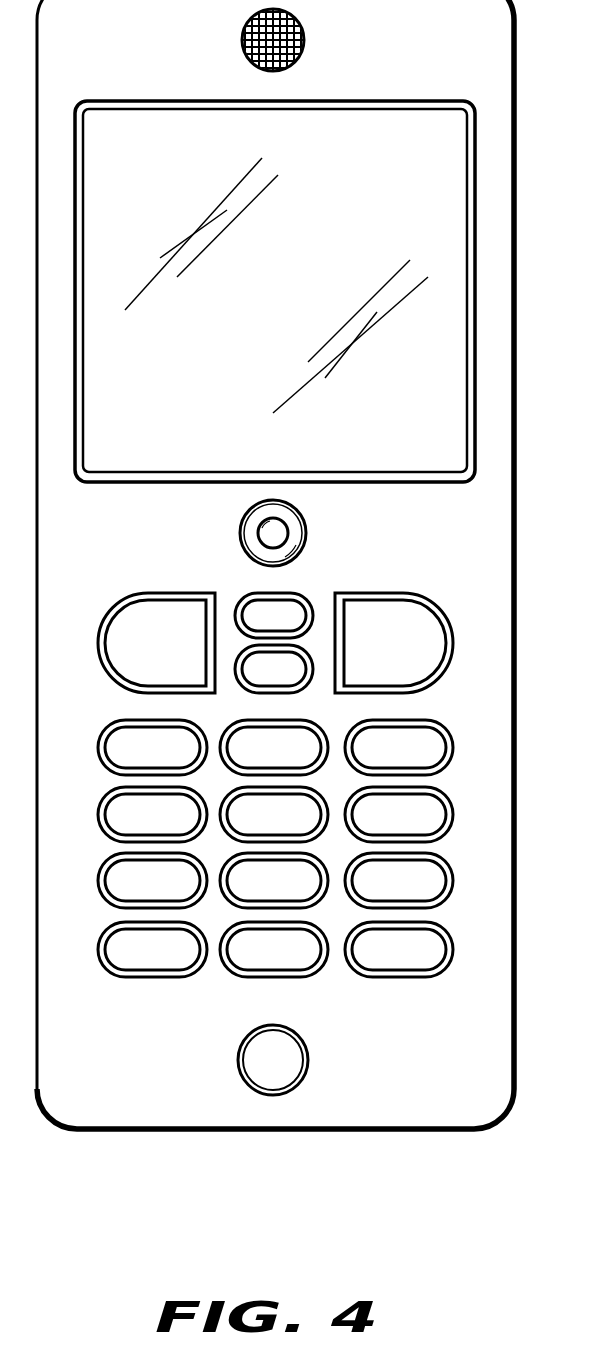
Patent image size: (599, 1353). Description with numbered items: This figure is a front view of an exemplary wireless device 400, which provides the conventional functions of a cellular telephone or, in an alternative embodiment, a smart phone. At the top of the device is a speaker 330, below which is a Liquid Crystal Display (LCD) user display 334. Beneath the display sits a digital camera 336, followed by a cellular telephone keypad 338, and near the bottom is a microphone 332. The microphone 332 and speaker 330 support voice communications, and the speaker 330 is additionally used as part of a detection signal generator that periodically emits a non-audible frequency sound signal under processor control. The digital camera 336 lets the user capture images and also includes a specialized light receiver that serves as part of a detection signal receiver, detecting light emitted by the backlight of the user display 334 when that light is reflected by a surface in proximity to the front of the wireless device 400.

The speaker 330 is at (242, 40).
The microphone 332 is at (239, 1059).
The Liquid Crystal Display (LCD) user display 334 is at (382, 125).
The digital camera 336 is at (240, 534).
The cellular telephone keypad 338 is at (378, 1004).
The wireless device 400 is at (298, 1240).